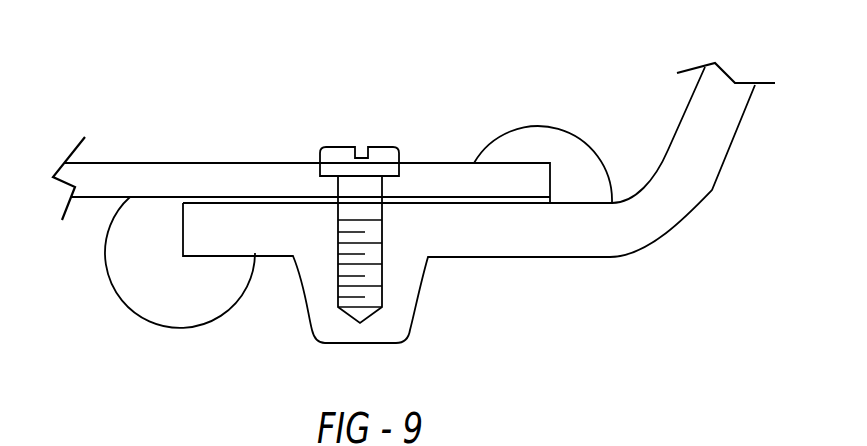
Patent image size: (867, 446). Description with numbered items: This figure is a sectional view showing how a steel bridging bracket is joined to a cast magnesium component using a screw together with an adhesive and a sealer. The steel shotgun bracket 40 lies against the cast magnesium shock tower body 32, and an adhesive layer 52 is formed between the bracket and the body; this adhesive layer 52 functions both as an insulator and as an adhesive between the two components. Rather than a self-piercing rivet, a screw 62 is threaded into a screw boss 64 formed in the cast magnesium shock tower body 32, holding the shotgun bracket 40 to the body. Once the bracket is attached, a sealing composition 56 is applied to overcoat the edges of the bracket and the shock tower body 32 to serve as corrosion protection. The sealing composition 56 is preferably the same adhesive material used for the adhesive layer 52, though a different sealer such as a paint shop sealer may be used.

The cast magnesium shock tower body 32 is at (643, 227).
The shotgun bracket 40 is at (180, 178).
The adhesive layer 52 is at (258, 202).
The sealing composition 56 is at (128, 270).
The screw 62 is at (382, 157).
The screw boss 64 is at (392, 317).